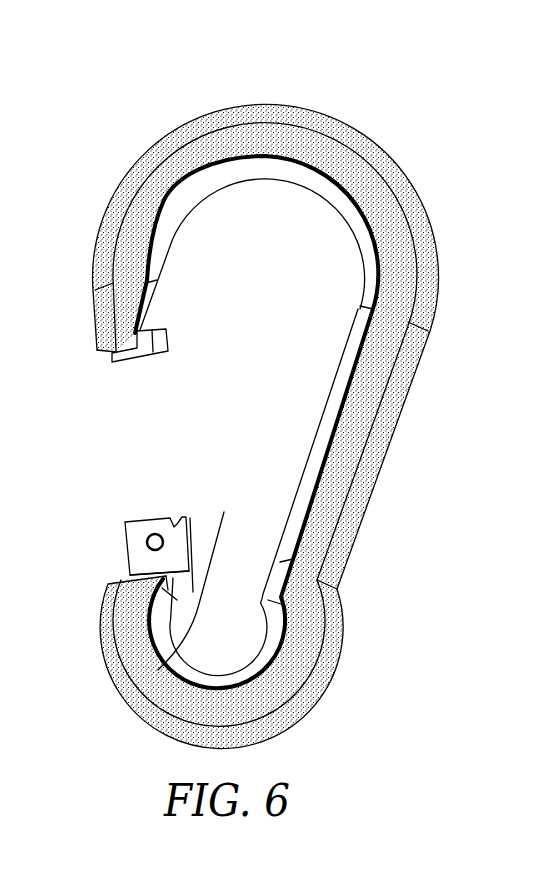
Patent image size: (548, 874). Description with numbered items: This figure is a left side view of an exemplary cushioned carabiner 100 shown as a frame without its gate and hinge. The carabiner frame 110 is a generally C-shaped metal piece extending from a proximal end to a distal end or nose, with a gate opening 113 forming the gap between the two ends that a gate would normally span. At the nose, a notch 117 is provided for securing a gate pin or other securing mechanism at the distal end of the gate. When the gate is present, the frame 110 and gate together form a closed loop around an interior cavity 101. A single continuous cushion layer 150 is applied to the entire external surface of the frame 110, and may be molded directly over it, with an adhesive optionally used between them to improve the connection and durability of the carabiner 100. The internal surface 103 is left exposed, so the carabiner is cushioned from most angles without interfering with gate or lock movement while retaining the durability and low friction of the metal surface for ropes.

The carabiner 100 is at (382, 114).
The cushion layer 150 is at (380, 442).
The carabiner frame 110 is at (166, 250).
The notch 117 is at (153, 326).
The gate opening 113 is at (154, 463).
The interior cavity 101 is at (158, 670).
The internal surface 103 is at (282, 550).